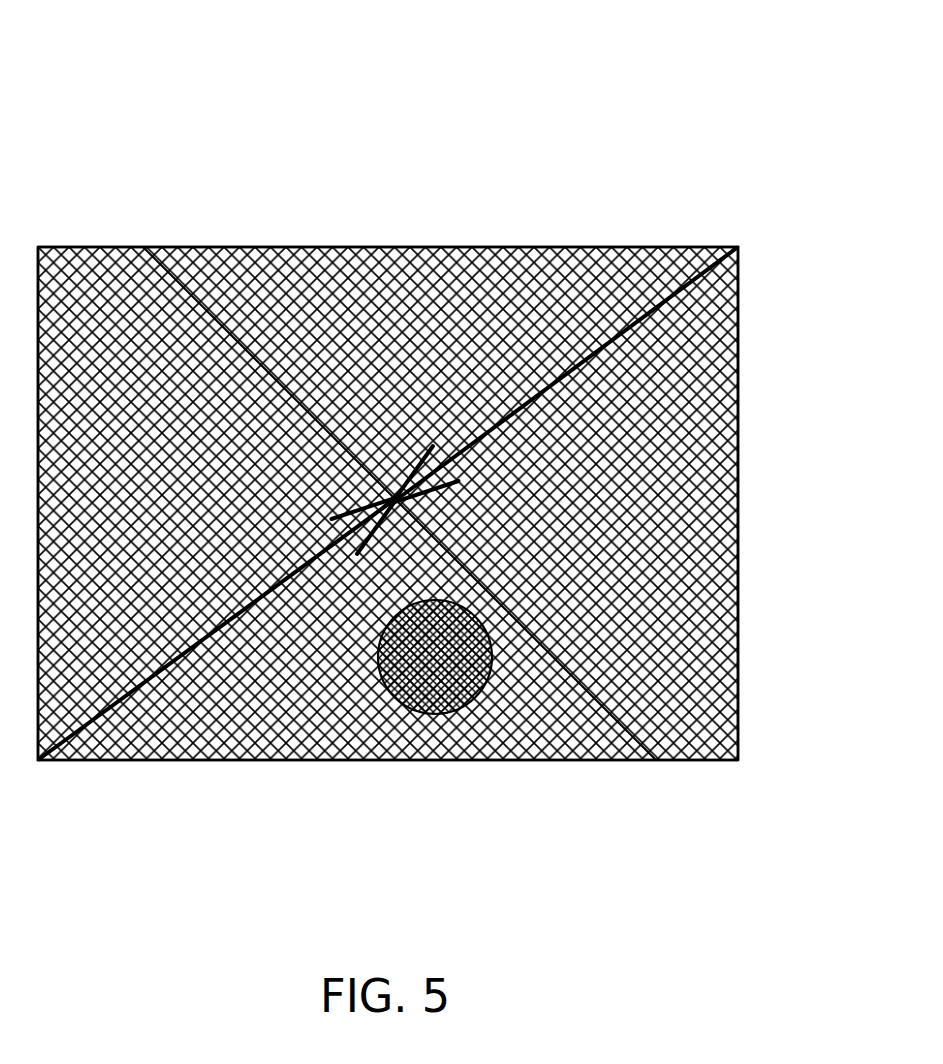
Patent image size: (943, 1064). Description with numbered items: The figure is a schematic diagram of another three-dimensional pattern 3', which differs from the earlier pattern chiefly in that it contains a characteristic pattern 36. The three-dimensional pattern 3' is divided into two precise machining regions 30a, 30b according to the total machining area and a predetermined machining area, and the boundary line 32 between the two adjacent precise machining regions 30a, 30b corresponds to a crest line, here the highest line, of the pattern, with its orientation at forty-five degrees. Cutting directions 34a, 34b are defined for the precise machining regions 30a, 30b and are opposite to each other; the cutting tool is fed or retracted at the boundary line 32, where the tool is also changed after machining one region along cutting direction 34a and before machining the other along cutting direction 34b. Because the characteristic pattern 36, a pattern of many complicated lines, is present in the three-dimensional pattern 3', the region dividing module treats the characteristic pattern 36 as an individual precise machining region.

The 3D pattern 3' is at (434, 394).
The precise machining region 30a is at (275, 727).
The precise machining region 30b is at (592, 298).
The boundary line 32 is at (294, 398).
The cutting direction 34a is at (132, 697).
The cutting direction 34b is at (677, 293).
The characteristic pattern 36 is at (436, 702).